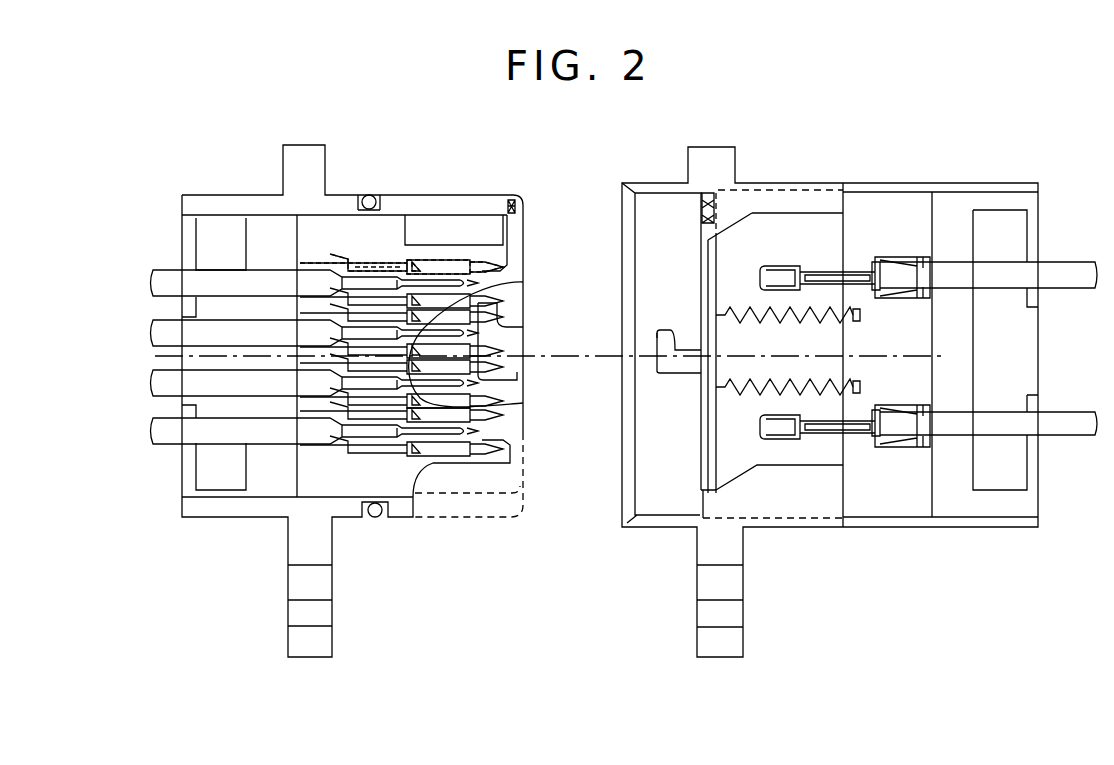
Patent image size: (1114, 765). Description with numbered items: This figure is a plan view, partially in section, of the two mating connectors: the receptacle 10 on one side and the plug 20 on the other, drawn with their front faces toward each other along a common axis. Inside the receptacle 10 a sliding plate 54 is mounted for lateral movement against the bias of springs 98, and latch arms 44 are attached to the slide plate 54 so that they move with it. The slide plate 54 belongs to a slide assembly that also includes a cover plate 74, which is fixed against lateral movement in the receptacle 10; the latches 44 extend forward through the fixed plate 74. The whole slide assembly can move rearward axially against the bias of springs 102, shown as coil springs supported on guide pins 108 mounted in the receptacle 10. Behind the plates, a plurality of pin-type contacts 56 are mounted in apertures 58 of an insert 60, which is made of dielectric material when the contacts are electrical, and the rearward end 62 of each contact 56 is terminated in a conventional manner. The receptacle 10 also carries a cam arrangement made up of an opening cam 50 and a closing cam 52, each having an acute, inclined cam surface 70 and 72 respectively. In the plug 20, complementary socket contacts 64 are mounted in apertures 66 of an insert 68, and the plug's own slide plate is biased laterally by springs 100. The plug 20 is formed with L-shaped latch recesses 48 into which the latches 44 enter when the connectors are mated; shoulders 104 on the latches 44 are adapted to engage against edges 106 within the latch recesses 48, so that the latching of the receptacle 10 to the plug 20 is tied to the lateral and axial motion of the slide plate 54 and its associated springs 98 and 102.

The receptacle 10 is at (940, 543).
The plug 20 is at (272, 540).
The latch arms 44 is at (685, 368).
The latch recesses 48 is at (507, 346).
The opening cam 50 is at (834, 495).
The closing cam 52 is at (790, 195).
The sliding plate 54 is at (712, 437).
The contacts 56 is at (817, 428).
The apertures 58 is at (845, 440).
The insert 60 is at (913, 490).
The rearward end 62 is at (1063, 428).
The contacts 64 is at (445, 428).
The apertures 66 is at (387, 450).
The insert 68 is at (282, 482).
The cam surface 70 is at (743, 470).
The cam surface 72 is at (738, 226).
The cover plate 74 is at (706, 462).
The springs 98 is at (700, 208).
The springs 100 is at (516, 201).
The springs 102 is at (812, 319).
The shoulders 104 is at (668, 330).
The edges 106 is at (500, 313).
The guide pins 108 is at (858, 320).